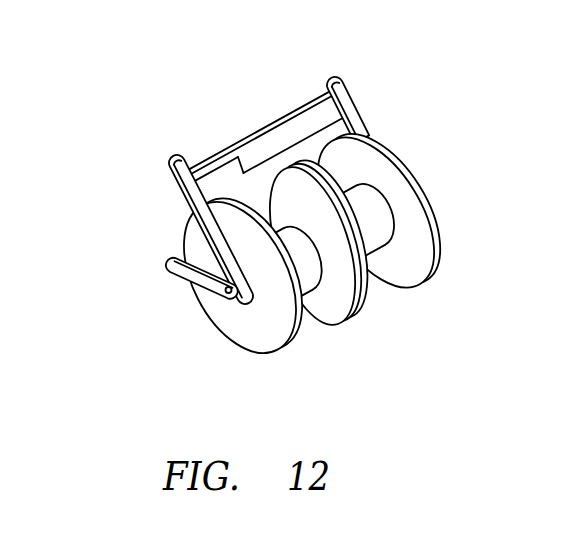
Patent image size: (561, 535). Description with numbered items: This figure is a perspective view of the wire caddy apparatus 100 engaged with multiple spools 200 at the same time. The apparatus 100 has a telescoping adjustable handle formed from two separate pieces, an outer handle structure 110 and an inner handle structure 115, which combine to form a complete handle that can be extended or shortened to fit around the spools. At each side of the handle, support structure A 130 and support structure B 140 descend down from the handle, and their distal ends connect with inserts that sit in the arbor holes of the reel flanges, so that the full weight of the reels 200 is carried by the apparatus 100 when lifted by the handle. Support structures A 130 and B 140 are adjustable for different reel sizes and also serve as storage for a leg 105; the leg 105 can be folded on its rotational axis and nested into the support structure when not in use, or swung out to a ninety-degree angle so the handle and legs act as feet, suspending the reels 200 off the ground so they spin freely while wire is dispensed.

The wire caddy apparatus 100 is at (144, 106).
The leg 105 is at (176, 278).
The outer handle structure 110 is at (303, 106).
The inner handle structure 115 is at (201, 161).
The support structure A 130 is at (181, 190).
The support structure B 140 is at (353, 103).
The spool or reel 200 is at (292, 346).